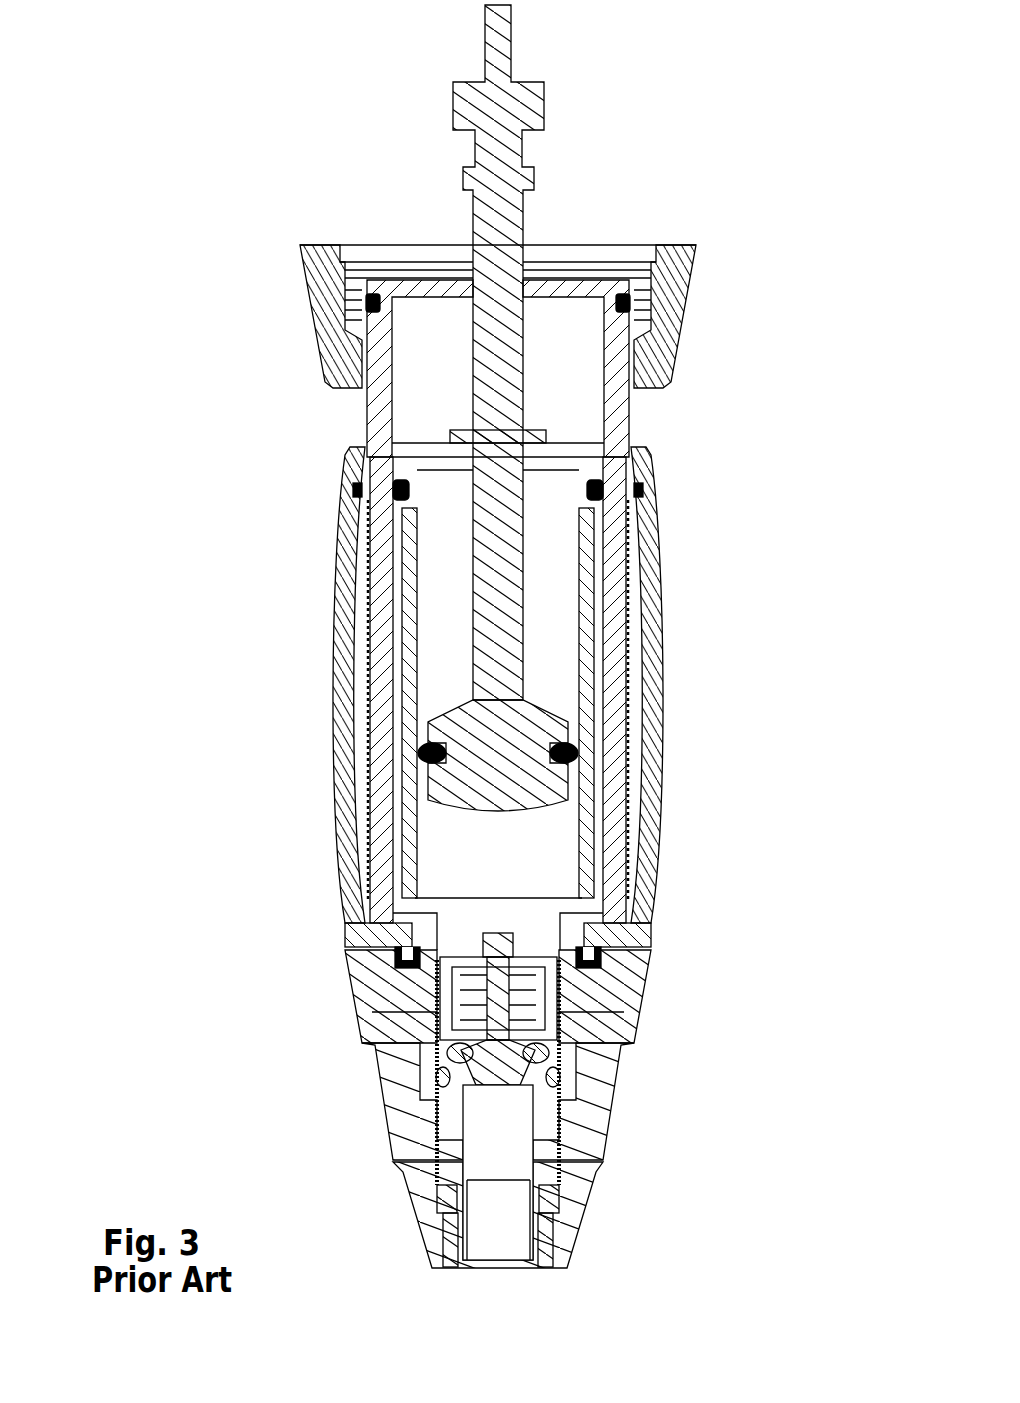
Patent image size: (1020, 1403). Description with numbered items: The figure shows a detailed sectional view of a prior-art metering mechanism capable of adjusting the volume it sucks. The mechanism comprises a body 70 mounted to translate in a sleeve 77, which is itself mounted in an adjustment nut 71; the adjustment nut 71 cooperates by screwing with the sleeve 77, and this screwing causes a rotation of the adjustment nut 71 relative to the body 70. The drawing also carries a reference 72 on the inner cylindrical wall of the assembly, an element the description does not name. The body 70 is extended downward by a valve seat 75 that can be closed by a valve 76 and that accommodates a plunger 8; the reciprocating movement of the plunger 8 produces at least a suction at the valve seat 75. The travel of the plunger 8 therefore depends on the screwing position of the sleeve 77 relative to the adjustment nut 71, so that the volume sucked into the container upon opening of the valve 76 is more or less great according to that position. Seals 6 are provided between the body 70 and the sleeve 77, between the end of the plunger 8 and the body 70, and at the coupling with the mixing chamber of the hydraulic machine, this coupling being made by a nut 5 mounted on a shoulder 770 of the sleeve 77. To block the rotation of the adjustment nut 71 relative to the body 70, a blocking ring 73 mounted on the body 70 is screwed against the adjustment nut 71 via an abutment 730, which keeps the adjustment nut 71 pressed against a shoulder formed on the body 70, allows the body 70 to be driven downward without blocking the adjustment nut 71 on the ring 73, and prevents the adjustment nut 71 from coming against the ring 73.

The plunger 8 is at (443, 97).
The nut 5 is at (474, 332).
The seals 6 is at (370, 302).
The shoulder 770 is at (637, 345).
The sleeve 77 is at (628, 405).
The cylinder 72 is at (357, 488).
The adjustment nut 71 is at (348, 684).
The blocking ring 73 is at (375, 978).
The abutment 730 is at (608, 958).
The body 70 is at (573, 1055).
The valve 76 is at (503, 1085).
The valve seat 75 is at (580, 1232).